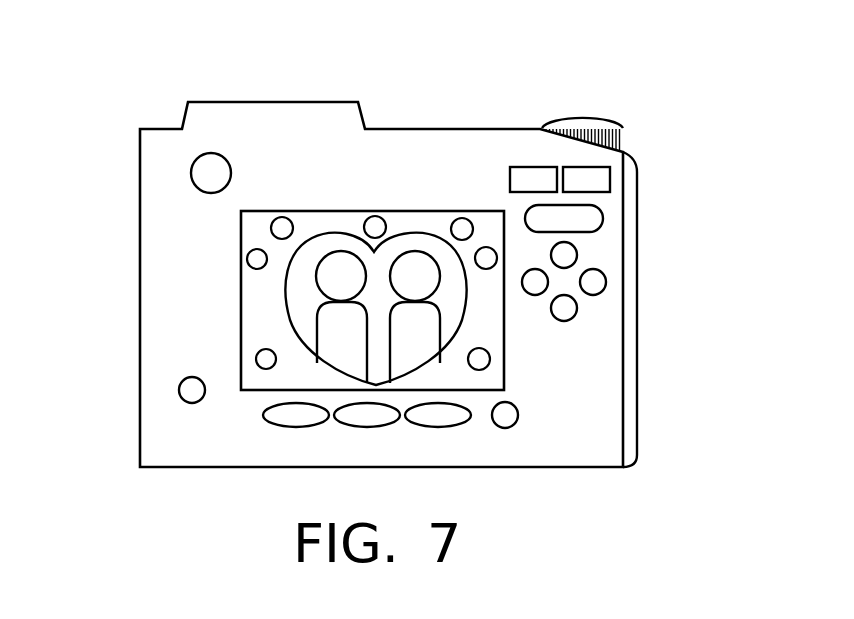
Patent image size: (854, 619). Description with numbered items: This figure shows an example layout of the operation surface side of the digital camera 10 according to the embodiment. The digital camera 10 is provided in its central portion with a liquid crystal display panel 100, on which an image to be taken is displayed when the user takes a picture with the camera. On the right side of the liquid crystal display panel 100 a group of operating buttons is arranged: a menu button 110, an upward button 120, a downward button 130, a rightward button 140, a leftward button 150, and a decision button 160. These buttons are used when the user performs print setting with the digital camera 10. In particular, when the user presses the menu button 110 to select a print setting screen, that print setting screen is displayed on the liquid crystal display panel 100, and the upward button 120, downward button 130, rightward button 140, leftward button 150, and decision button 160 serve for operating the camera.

The digital camera 10 is at (444, 88).
The liquid crystal display panel 100 is at (241, 300).
The menu button 110 is at (603, 219).
The upward button 120 is at (577, 256).
The downward button 130 is at (562, 321).
The rightward button 140 is at (597, 293).
The leftward button 150 is at (529, 271).
The decision button 160 is at (518, 414).